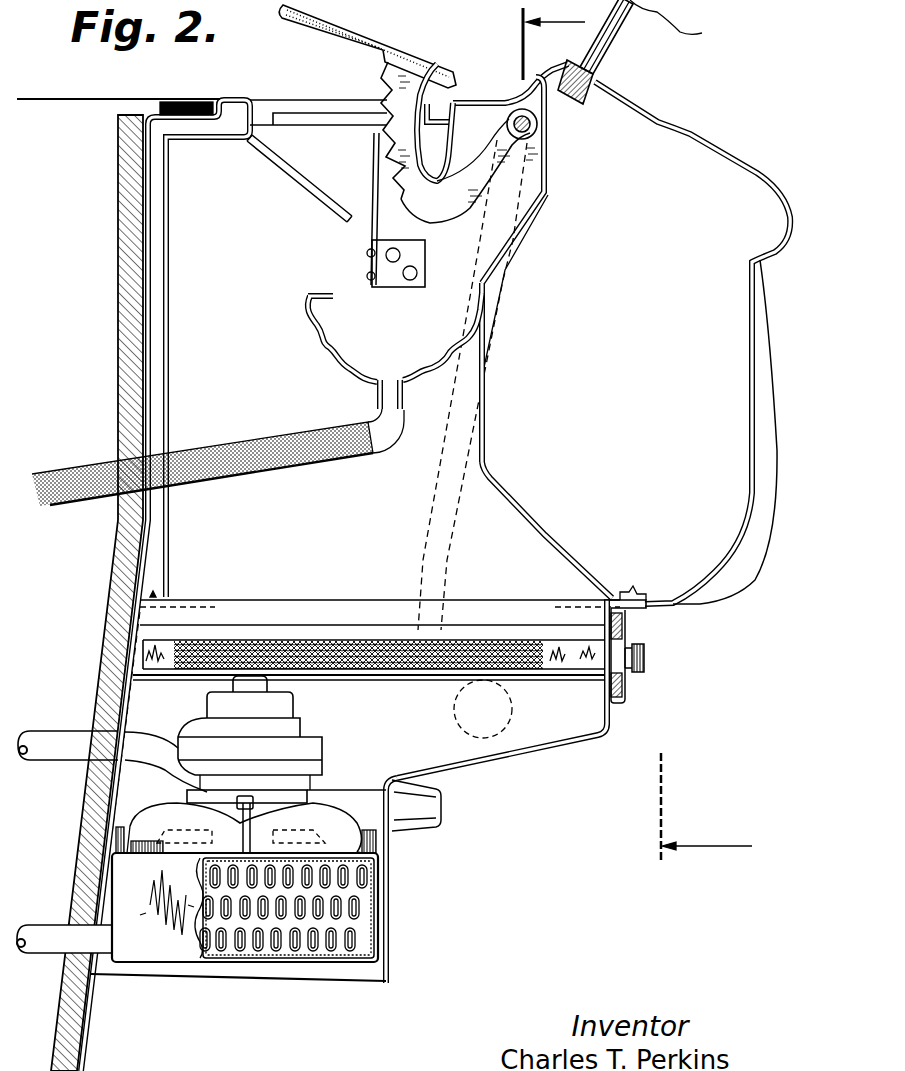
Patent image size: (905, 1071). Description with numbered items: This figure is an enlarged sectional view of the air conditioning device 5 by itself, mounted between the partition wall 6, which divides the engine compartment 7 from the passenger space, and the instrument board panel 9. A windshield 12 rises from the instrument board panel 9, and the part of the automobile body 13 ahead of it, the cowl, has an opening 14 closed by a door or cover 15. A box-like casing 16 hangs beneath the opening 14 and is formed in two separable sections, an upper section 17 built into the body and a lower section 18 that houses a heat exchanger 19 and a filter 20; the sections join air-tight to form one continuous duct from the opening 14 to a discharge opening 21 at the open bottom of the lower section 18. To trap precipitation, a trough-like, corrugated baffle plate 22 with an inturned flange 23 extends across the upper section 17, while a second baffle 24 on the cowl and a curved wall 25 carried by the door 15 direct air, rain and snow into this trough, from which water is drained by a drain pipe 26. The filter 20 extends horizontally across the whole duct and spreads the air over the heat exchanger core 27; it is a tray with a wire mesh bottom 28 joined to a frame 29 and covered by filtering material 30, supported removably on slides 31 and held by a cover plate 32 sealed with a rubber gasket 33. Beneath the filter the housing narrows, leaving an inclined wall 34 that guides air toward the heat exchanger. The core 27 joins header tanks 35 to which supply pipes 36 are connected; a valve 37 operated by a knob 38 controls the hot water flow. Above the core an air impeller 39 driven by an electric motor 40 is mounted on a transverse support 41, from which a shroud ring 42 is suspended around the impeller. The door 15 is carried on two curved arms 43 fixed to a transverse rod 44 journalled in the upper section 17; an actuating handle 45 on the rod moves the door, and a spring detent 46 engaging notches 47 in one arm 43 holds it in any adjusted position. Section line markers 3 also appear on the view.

The section line 3- 3 is at (625, 431).
The air conditioning device 5 is at (422, 867).
The partition wall 6 is at (122, 267).
The engine compartment 7 is at (62, 615).
The instrument board panel 9 is at (749, 322).
The windshield 12 is at (602, 50).
The automobile body 13 is at (486, 100).
The opening 14 is at (291, 112).
The door or cover 15 is at (356, 28).
The casing 16 is at (533, 514).
The upper section 17 is at (485, 416).
The lower section 18 is at (496, 754).
The heat exchanger 19 is at (362, 927).
The filter 20 is at (360, 641).
The discharge opening 21 is at (356, 985).
The baffle plate 22 is at (316, 333).
The inturned flange 23 is at (324, 294).
The second baffle 24 is at (286, 171).
The curved wall 25 is at (424, 152).
The drain pipe 26 is at (267, 440).
The heat exchanger core 27 is at (321, 945).
The wire mesh bottom 28 is at (327, 669).
The frame 29 is at (551, 650).
The filtering material 30 is at (274, 641).
The slides 31 is at (440, 677).
The cover plate 32 is at (628, 695).
The rubber gasket 33 is at (611, 686).
The inclined wall 34 is at (535, 746).
The header tanks 35 is at (150, 946).
The supply pipes 36 is at (65, 730).
The valve 37 is at (365, 795).
The knob 38 is at (421, 808).
The air impeller 39 is at (322, 821).
The electric motor 40 is at (198, 718).
The transverse support 41 is at (190, 797).
The shroud ring 42 is at (185, 849).
The curved arms 43 is at (451, 208).
The transverse rod 44 is at (538, 125).
The actuating handle 45 is at (497, 303).
The spring detent 46 is at (377, 147).
The notches 47 is at (388, 95).